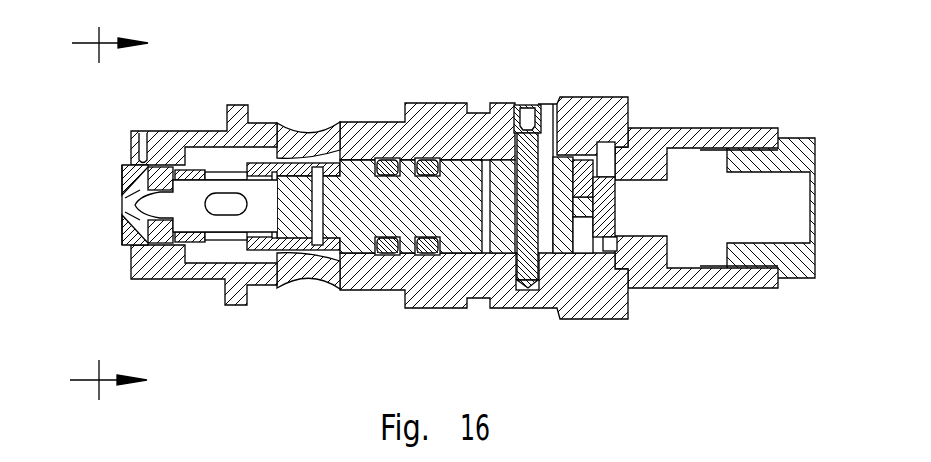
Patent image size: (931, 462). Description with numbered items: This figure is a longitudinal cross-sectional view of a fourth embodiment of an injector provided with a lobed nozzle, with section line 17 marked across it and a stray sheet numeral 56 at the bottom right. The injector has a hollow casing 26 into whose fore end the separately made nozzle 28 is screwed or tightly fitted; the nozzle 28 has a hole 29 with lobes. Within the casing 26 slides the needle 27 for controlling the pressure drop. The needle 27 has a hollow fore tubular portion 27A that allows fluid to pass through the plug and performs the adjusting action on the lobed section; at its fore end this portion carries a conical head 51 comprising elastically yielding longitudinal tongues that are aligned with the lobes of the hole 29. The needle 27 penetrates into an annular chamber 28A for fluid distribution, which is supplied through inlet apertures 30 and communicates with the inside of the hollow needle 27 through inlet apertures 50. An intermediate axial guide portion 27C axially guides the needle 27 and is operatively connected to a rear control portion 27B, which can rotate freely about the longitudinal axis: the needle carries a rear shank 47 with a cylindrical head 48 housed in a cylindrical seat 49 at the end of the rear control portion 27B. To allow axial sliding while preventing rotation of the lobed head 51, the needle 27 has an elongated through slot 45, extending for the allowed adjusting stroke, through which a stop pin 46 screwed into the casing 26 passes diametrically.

The section line 17- 17 is at (101, 215).
The casing 26 is at (414, 110).
The needle 27 is at (427, 265).
The fore tubular portion 27A is at (197, 168).
The rear control portion 27B is at (647, 155).
The intermediate axial guide portion 27C is at (450, 190).
The nozzle 28 is at (156, 157).
The annular chamber 28A is at (208, 253).
The hole 29 is at (123, 196).
The inlet apertures 30 is at (320, 130).
The through slot 45 is at (548, 172).
The stop pin 46 is at (528, 268).
The rear shank 47 is at (582, 213).
The cylindrical head 48 is at (612, 198).
The cylindrical seat 49 is at (607, 238).
The inlet apertures 50 is at (228, 174).
The conical head 51 is at (147, 250).
The sheet numeral 56 is at (790, 446).